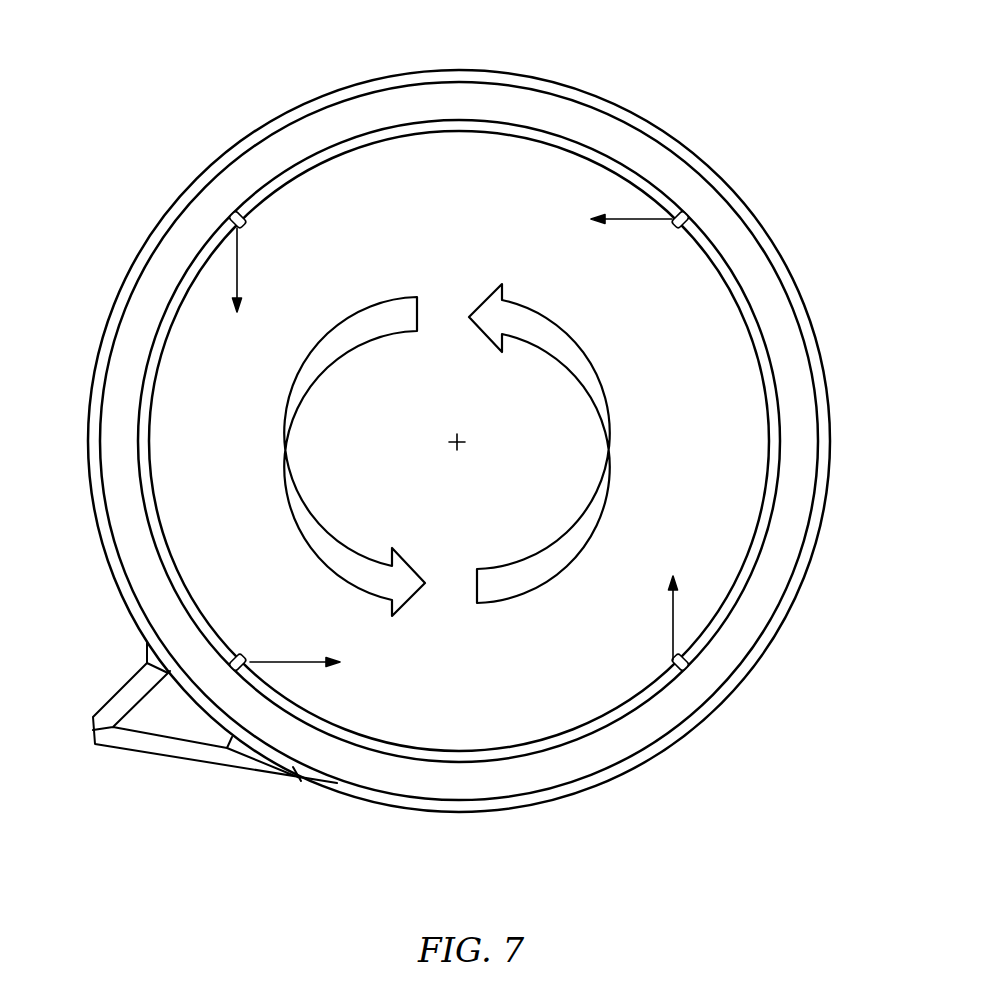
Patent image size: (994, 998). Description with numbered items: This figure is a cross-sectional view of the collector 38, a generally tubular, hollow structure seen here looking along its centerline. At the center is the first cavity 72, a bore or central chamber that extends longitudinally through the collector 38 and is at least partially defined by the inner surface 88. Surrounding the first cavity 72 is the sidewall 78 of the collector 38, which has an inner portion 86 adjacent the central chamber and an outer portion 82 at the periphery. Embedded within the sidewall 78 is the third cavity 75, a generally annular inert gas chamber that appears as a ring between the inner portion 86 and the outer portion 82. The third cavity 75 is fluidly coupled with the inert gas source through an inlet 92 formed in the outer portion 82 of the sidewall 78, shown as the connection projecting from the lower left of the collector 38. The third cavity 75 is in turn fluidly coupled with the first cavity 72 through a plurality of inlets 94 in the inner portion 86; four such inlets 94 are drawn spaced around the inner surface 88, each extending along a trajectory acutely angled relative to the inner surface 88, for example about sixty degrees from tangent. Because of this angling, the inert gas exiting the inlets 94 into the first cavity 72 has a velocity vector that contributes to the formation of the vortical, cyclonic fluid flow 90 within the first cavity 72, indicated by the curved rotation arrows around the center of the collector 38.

The collector 38 is at (736, 87).
The first cavity 72 is at (473, 496).
The third cavity 75 is at (746, 229).
The sidewall 78 is at (831, 349).
The outer portion 82 is at (592, 94).
The inner portion 86 is at (559, 147).
The inner surface 88 is at (737, 310).
The vortical fluid flow 90 is at (641, 454).
The inlet 92 is at (93, 743).
The inlets 94 is at (244, 217).